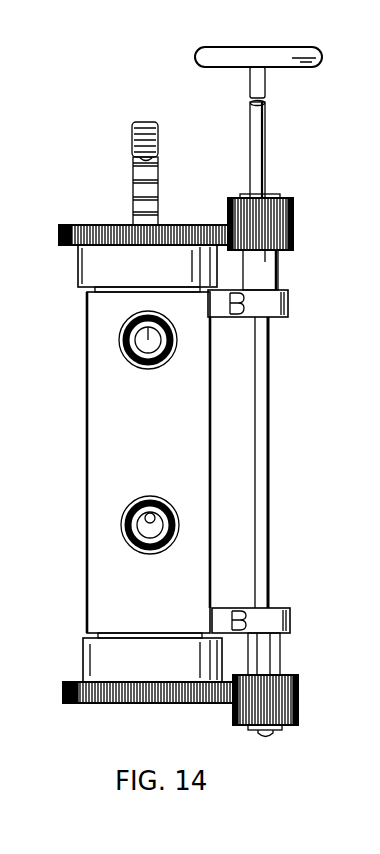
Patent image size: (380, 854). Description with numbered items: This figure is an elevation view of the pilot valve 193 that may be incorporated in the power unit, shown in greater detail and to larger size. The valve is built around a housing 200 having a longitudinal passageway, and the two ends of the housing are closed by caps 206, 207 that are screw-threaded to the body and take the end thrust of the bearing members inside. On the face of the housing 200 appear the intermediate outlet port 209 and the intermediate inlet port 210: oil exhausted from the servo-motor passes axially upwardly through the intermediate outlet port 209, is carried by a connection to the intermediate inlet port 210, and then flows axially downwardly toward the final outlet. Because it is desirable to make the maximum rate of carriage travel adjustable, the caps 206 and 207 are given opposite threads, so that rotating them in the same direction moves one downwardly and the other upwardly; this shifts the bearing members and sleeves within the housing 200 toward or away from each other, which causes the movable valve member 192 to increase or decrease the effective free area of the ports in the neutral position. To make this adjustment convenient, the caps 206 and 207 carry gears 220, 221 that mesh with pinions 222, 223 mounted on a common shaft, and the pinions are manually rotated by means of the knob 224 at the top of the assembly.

The movable valve member 192 is at (133, 185).
The pilot valve 193 is at (328, 388).
The housing 200 is at (87, 433).
The cap 206 is at (78, 258).
The cap 207 is at (82, 660).
The intermediate outlet port 209 is at (148, 340).
The intermediate inlet port 210 is at (150, 523).
The gear 220 is at (82, 225).
The gear 221 is at (83, 702).
The pinion 222 is at (287, 198).
The pinion 223 is at (298, 704).
The knob 224 is at (297, 67).